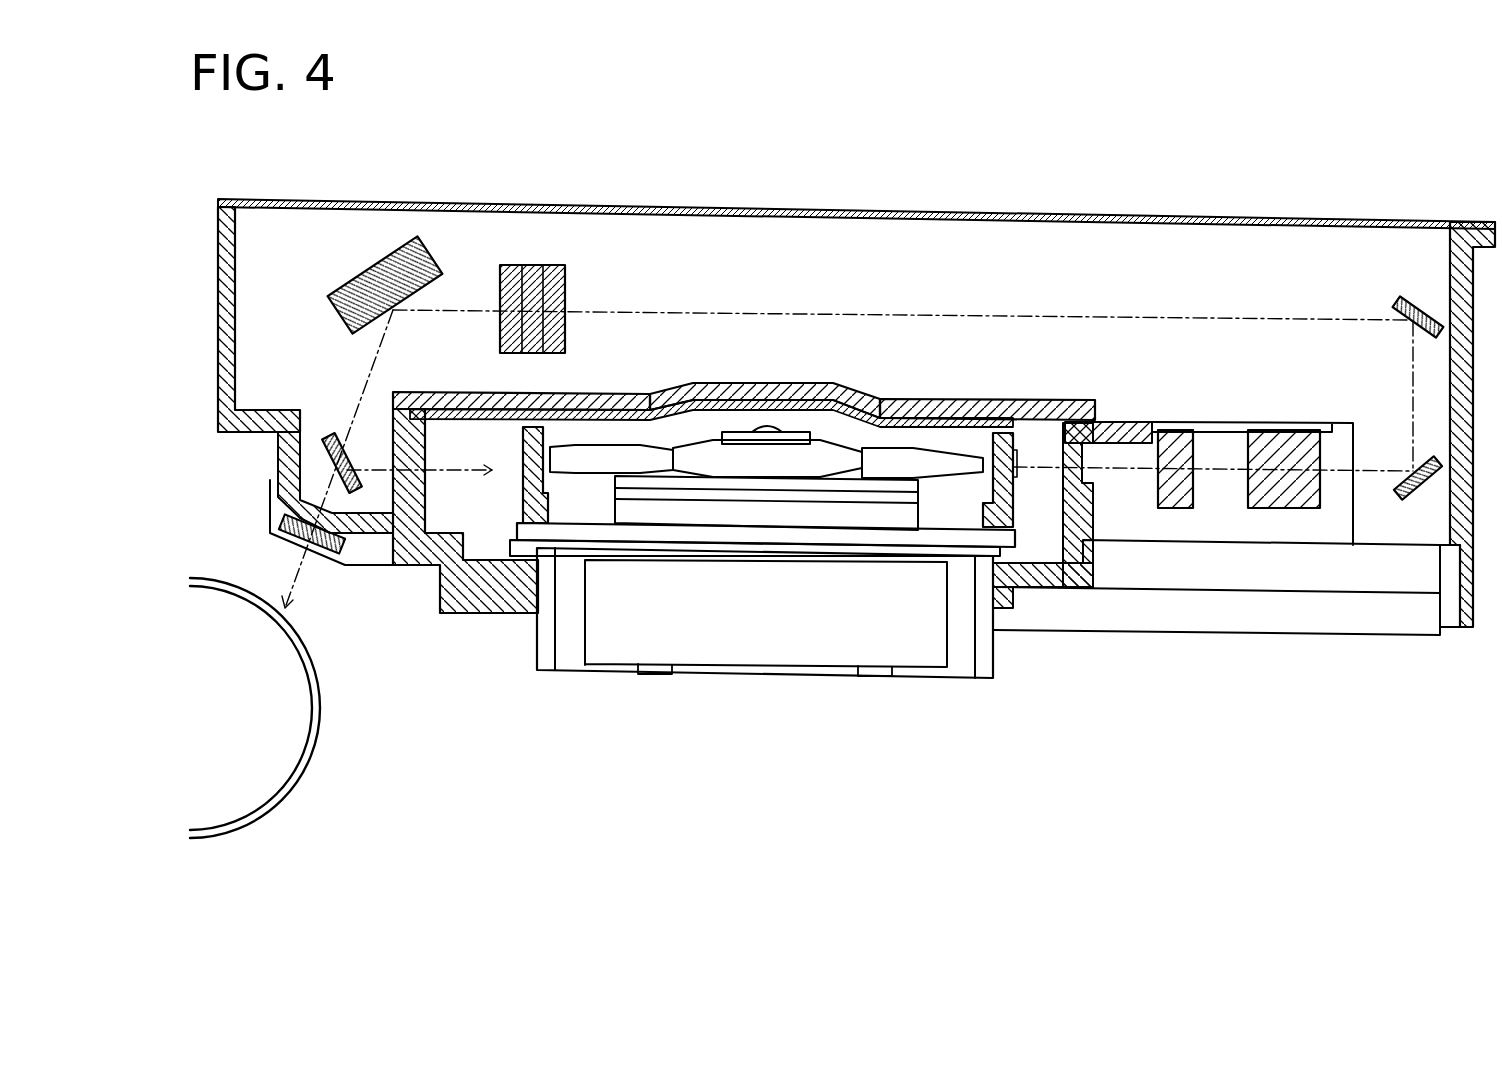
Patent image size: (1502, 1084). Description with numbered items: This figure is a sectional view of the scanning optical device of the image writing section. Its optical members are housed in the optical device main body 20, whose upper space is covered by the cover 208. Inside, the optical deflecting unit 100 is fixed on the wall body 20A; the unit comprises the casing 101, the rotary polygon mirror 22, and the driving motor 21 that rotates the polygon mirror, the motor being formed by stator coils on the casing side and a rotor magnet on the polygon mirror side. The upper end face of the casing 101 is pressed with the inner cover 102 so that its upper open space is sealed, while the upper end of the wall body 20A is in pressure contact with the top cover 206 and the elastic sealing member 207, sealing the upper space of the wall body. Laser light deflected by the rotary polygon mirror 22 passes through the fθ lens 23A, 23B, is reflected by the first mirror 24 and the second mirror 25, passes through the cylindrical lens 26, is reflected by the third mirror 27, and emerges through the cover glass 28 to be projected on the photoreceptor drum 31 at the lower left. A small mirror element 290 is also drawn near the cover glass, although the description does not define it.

The optical device main body 20 is at (219, 229).
The cover 208 is at (585, 202).
The third mirror 27 is at (380, 258).
The cylindrical lens 26 is at (513, 265).
The second mirror 25 is at (1400, 298).
The mirror 290 is at (327, 430).
The wall body 20A is at (392, 427).
The cover glass 28 is at (296, 510).
The elastic sealing member 207 is at (593, 393).
The cover 102 is at (727, 386).
The top cover 206 is at (847, 385).
The optical deflecting unit 100 is at (1036, 356).
The casing 101 is at (520, 437).
The rotary polygon mirror 22 is at (932, 455).
The driving motor 21 is at (887, 522).
The fθ lens 23A is at (1177, 502).
The fθ lens 23B is at (1270, 500).
The first mirror 24 is at (1402, 492).
The photoreceptor drum 31 is at (322, 745).